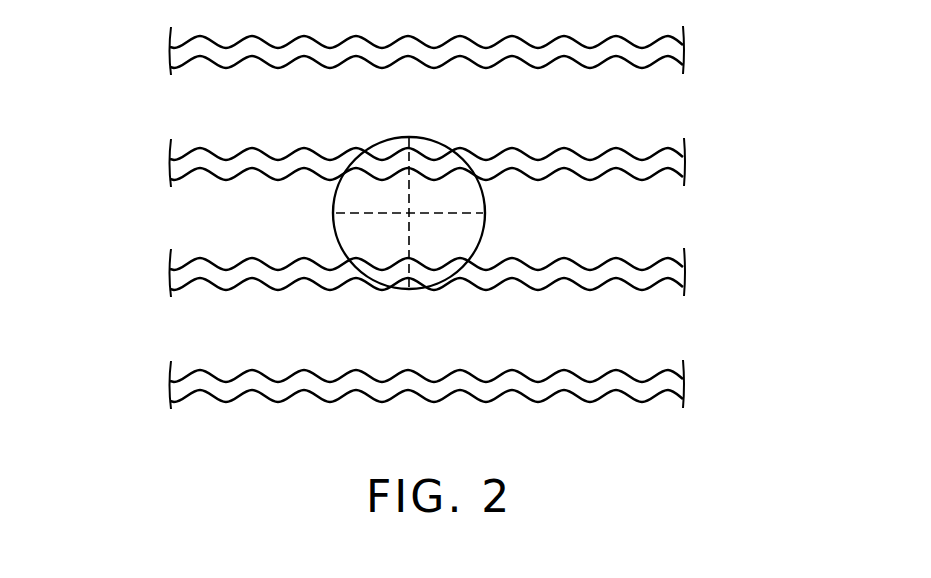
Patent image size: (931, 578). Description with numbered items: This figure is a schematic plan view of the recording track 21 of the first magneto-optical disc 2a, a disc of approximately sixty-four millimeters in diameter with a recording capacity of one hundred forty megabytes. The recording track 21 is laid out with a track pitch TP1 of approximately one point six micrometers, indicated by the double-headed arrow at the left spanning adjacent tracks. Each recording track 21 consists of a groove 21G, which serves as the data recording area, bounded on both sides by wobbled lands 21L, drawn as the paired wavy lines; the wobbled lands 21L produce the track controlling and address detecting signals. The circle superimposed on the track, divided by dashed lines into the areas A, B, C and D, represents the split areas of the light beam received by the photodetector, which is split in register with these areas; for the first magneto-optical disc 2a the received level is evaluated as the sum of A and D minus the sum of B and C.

The first magneto-optical disc 2a is at (482, 238).
The recording track 21 is at (441, 213).
The wobbled lands 21L is at (668, 158).
The groove 21G is at (663, 215).
The track pitch TP1 is at (95, 166).